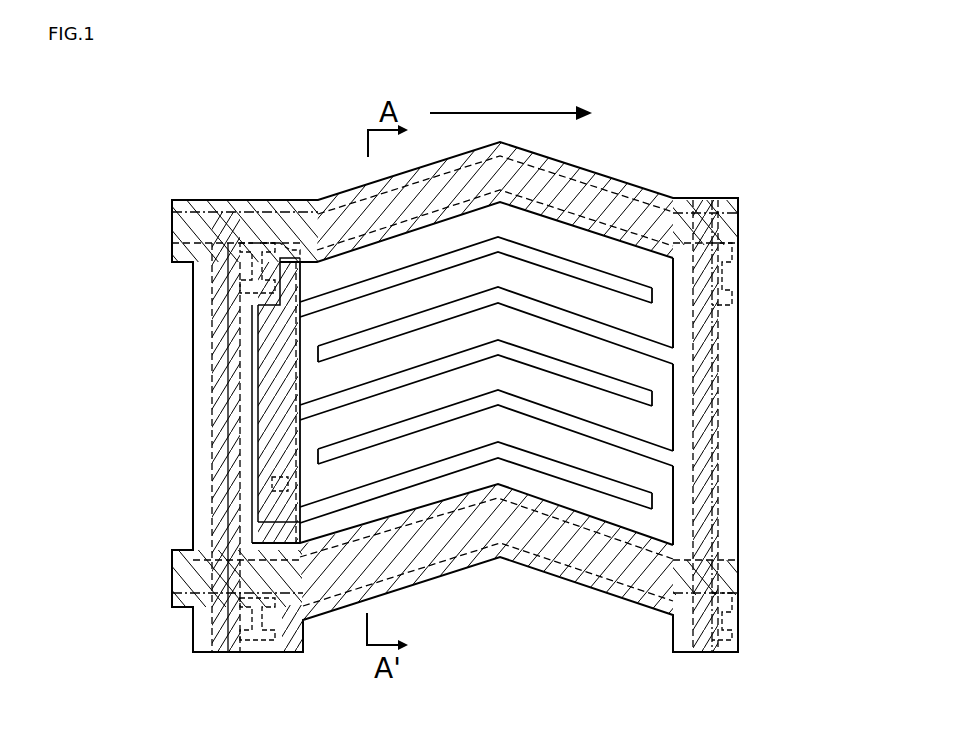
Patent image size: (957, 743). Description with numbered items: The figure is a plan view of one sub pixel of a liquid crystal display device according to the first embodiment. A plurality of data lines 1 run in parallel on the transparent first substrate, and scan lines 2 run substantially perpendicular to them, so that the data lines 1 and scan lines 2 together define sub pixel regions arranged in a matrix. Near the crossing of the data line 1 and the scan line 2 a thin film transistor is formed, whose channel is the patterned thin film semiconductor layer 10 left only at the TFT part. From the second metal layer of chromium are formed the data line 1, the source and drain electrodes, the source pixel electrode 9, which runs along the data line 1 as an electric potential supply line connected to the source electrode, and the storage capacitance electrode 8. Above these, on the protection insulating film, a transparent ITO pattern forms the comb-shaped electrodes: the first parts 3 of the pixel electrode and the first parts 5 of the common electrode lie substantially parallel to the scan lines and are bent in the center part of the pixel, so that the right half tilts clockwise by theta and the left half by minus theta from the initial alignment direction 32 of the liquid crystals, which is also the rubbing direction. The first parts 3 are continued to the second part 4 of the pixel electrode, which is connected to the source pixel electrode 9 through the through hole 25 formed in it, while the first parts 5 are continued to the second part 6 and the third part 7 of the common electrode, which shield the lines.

The data line 1 is at (222, 403).
The scan line 2 is at (725, 228).
The first part of pixel electrode 3 is at (523, 250).
The second part of pixel electrode 4 is at (278, 368).
The first part of common electrode 5 is at (530, 408).
The second part of common electrode 6 is at (562, 568).
The third part of common electrode 7 is at (202, 450).
The storage capacitance electrode 8 is at (612, 578).
The source pixel electrode 9 is at (288, 235).
The thin film semiconductor layer 10 is at (258, 243).
The through hole 25 is at (272, 487).
The initial alignment direction 32 is at (511, 100).